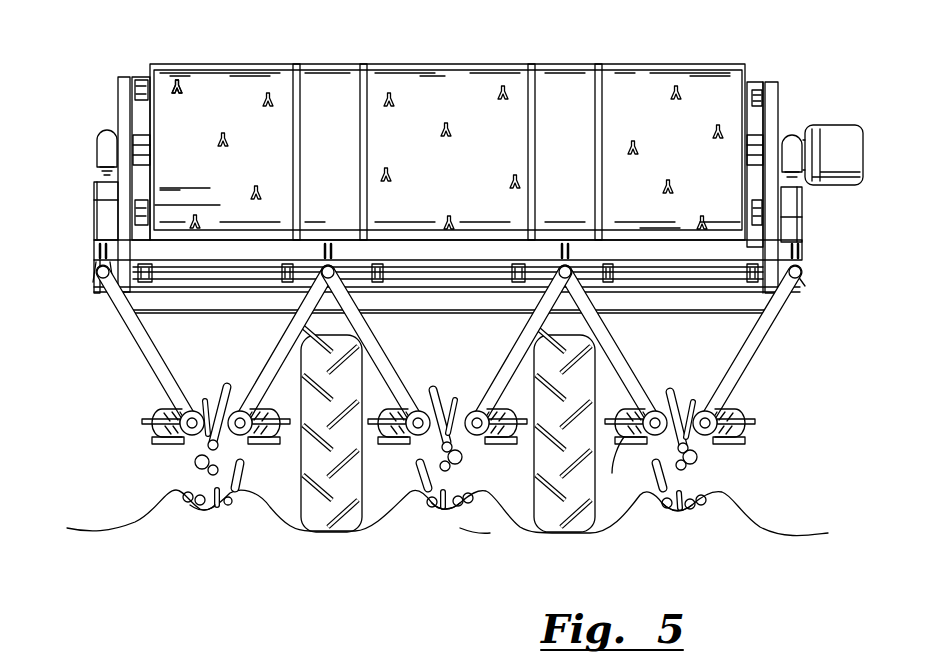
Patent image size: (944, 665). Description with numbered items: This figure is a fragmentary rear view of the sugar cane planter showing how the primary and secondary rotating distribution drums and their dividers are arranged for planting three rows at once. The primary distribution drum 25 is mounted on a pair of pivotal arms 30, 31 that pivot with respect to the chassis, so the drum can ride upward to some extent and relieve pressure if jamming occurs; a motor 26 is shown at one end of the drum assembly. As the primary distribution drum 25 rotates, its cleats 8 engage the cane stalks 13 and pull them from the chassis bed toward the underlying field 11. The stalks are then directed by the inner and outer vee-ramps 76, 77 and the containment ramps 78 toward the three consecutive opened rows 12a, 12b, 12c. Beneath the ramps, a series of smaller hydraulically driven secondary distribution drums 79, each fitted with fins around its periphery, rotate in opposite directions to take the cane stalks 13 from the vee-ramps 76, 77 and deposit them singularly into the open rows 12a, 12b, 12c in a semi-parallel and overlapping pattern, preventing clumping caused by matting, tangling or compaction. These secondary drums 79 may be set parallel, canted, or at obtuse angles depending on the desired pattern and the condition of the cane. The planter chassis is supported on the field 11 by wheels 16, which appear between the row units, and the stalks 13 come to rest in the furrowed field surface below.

The cleats 8 is at (182, 78).
The field 11 is at (498, 552).
The opened row 12a is at (210, 512).
The opened row 12b is at (452, 510).
The opened row 12c is at (682, 513).
The cane stalks 13 is at (215, 502).
The wheel 16 is at (323, 515).
The primary distribution drum 25 is at (458, 186).
The motor 26 is at (830, 140).
The pivotal arm 30 is at (795, 200).
The pivotal arm 31 is at (100, 197).
The inner vee-ramp 76 is at (261, 378).
The outer vee-ramp 77 is at (502, 372).
The containment ramps 78 is at (166, 358).
The secondary distribution drums 79 is at (152, 408).